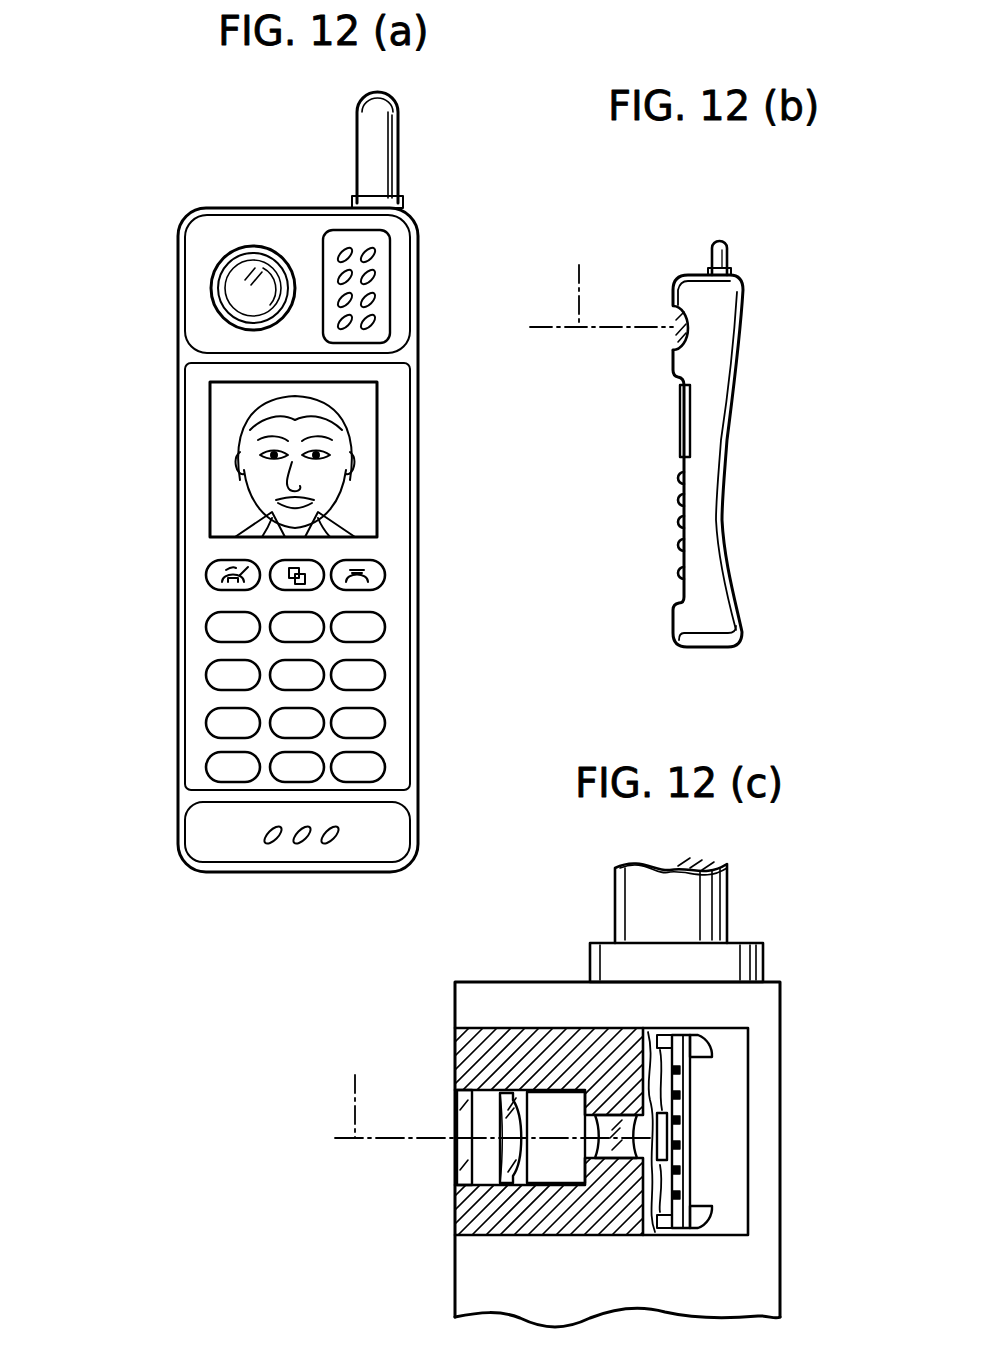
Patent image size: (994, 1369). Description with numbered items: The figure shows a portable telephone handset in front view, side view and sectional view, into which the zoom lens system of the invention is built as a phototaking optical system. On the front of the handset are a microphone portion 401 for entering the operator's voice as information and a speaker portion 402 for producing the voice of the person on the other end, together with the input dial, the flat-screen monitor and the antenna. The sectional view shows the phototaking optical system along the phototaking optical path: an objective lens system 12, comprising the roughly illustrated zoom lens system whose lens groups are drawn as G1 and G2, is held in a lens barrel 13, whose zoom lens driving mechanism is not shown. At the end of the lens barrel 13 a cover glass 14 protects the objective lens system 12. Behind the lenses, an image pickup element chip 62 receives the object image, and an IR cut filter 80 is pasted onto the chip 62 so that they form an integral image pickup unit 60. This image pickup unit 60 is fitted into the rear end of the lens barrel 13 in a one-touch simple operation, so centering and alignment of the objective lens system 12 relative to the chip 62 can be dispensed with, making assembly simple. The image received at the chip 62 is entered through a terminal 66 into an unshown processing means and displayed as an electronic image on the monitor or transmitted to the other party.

The microphone portion 401 is at (303, 845).
The speaker portion 402 is at (378, 246).
The objective lens system 12 is at (490, 1162).
The lens barrel 13 is at (565, 1032).
The cover glass 14 is at (462, 1110).
The image pickup unit 60 is at (702, 1152).
The image pickup element chip 62 is at (652, 1212).
The terminal 66 is at (675, 1068).
The IR cut filter 80 is at (648, 1048).
The first lens group G1 is at (518, 1182).
The second lens group G2 is at (618, 1170).